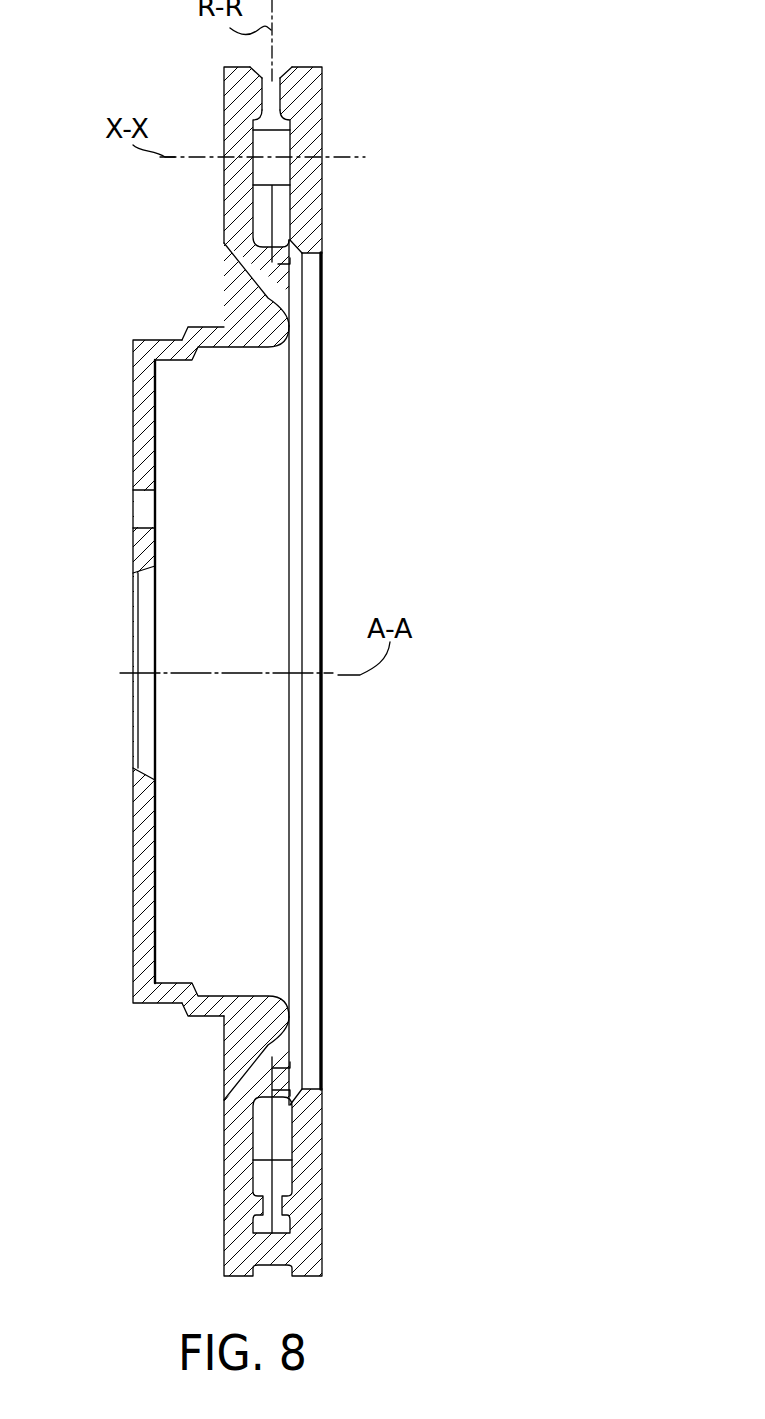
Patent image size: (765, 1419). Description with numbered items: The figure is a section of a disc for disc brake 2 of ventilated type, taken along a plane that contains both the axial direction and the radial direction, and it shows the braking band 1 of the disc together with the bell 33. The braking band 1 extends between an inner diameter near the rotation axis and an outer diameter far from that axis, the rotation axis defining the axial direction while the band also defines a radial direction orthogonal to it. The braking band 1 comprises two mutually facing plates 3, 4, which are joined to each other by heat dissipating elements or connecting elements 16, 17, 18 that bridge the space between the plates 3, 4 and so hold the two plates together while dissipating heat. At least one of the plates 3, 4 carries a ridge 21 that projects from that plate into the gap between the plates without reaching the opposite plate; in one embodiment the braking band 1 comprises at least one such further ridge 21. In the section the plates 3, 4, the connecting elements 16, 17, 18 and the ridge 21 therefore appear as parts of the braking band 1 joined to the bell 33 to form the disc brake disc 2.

The braking band 1 is at (307, 115).
The disc brake disc 2 is at (446, 231).
The plate 3 is at (310, 230).
The plate 4 is at (237, 193).
The connecting elements 16 is at (281, 74).
The connecting elements 17 is at (273, 158).
The connecting elements 18 is at (322, 248).
The ridge 21 is at (282, 100).
The bell 33 is at (135, 354).